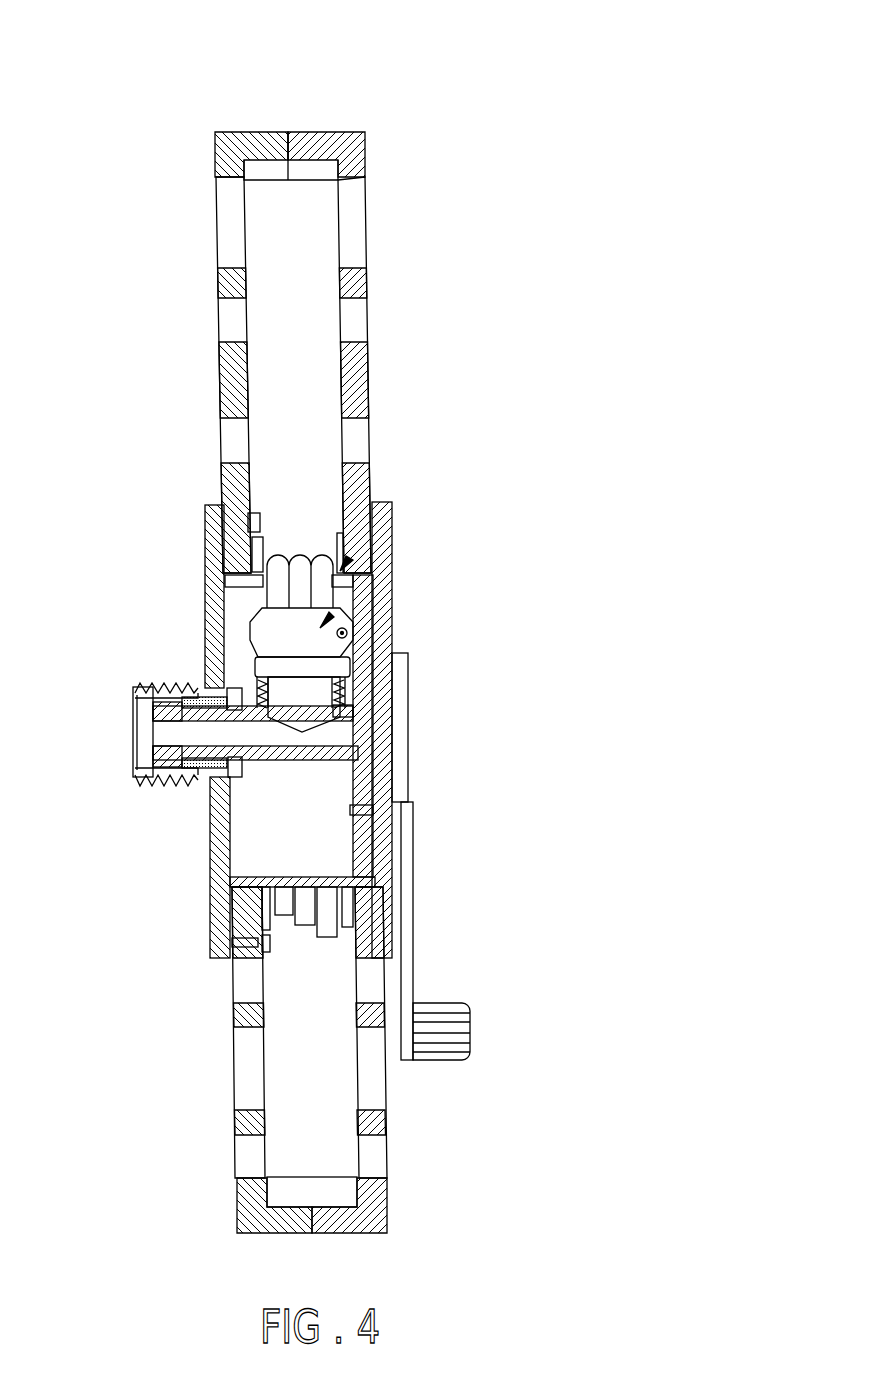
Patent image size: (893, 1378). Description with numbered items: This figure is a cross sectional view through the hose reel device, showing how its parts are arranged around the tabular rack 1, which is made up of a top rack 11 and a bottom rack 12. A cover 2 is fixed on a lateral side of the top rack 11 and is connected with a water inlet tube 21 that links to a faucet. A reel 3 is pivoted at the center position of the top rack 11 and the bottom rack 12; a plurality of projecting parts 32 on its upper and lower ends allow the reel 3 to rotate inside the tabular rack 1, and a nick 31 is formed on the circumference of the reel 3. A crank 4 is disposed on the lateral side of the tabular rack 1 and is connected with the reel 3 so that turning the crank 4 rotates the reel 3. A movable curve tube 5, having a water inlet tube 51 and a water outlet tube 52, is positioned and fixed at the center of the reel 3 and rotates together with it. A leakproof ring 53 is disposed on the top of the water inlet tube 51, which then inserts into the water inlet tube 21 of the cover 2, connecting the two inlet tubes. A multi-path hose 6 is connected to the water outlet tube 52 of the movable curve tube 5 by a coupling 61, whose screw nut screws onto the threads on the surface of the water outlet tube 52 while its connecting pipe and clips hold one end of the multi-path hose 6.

The tabular rack 1 is at (330, 53).
The top rack 11 is at (240, 133).
The bottom rack 12 is at (340, 133).
The cover 2 is at (223, 882).
The water inlet tube 21 is at (132, 770).
The reel 3 is at (393, 682).
The nick 31 is at (387, 528).
The projecting parts 32 is at (257, 562).
The crank 4 is at (432, 1018).
The movable curve tube 5 is at (320, 755).
The water inlet tube 51 is at (153, 717).
The water outlet tube 52 is at (405, 704).
The leakproof ring 53 is at (193, 682).
The multi-path hose 6 is at (280, 595).
The coupling 61 is at (392, 607).